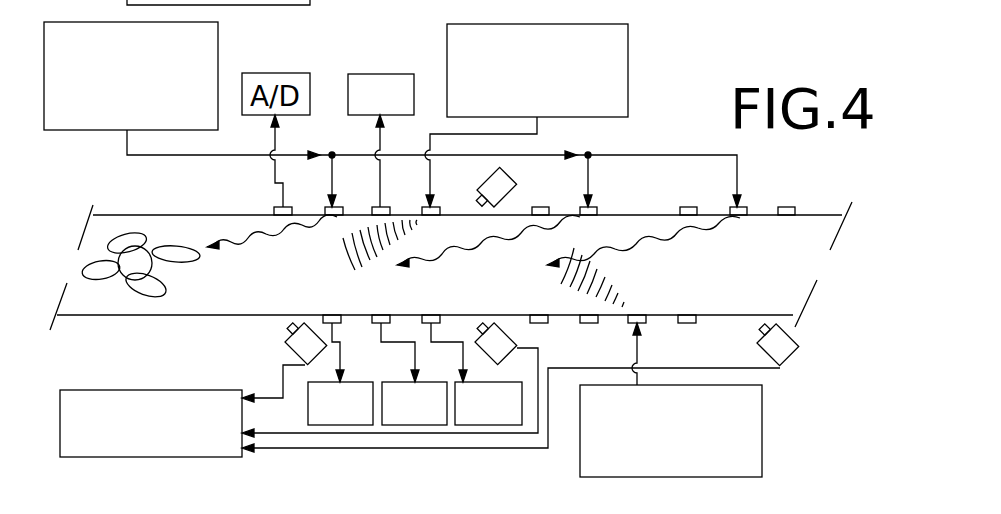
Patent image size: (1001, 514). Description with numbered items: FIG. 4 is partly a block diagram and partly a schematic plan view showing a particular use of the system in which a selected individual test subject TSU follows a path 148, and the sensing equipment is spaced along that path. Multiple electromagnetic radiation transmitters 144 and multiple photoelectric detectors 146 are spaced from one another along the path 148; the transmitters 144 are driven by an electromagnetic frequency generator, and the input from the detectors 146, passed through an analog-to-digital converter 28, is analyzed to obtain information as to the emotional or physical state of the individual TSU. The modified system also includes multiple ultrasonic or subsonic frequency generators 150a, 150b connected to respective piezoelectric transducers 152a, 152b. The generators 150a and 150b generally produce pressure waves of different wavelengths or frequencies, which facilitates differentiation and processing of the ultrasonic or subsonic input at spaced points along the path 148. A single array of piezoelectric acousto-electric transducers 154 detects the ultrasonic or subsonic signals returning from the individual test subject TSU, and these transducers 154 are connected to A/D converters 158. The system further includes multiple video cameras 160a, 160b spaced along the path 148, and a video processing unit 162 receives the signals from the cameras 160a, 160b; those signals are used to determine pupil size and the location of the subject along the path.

The analog-to-digital converter 28 is at (355, 73).
The electromagnetic radiation transmitters 144 is at (107, 130).
The photoelectric detectors 146 is at (368, 215).
The path 148 is at (805, 278).
The ultrasonic or subsonic frequency generator 150a is at (563, 24).
The ultrasonic or subsonic frequency generator 150b is at (762, 430).
The piezoelectric transducer 152a is at (433, 216).
The piezoelectric transducer 152b is at (643, 318).
The piezoelectric acousto-electric transducers 154 is at (540, 325).
The A/D converters 158 is at (330, 425).
The video camera 160a is at (486, 323).
The video camera 160b is at (797, 336).
The video processing unit 162 is at (195, 390).
The individual test subject TSU is at (177, 268).